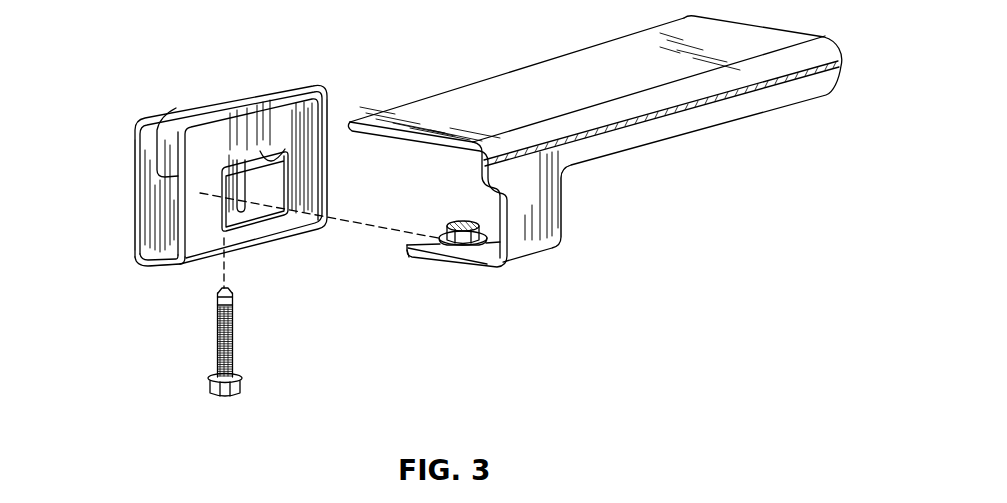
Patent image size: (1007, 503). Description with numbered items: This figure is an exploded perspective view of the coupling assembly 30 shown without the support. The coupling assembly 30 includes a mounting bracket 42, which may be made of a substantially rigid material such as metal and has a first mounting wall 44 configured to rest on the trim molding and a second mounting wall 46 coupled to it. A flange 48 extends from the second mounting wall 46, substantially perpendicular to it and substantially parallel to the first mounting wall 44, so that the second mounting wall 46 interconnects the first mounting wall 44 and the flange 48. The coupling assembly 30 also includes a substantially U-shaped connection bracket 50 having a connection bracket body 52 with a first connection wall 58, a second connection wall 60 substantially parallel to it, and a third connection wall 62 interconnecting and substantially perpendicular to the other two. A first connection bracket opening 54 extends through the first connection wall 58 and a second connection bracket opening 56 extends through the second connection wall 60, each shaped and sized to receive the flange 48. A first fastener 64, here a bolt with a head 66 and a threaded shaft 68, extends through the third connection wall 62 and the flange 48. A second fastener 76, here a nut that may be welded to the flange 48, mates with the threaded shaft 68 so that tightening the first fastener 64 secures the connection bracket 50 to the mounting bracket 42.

The coupling assembly 30 is at (779, 177).
The mounting bracket 42 is at (748, 35).
The first mounting wall 44 is at (558, 64).
The second mounting wall 46 is at (548, 213).
The flange 48 is at (450, 265).
The connection bracket 50 is at (130, 123).
The connection bracket body 52 is at (137, 212).
The first connection bracket opening 54 is at (277, 137).
The second connection bracket opening 56 is at (172, 106).
The first connection wall 58 is at (329, 99).
The second connection wall 60 is at (237, 104).
The third connection wall 62 is at (150, 265).
The first fastener 64 is at (235, 348).
The head 66 is at (227, 398).
The threaded shaft 68 is at (233, 318).
The second fastener 76 is at (443, 226).